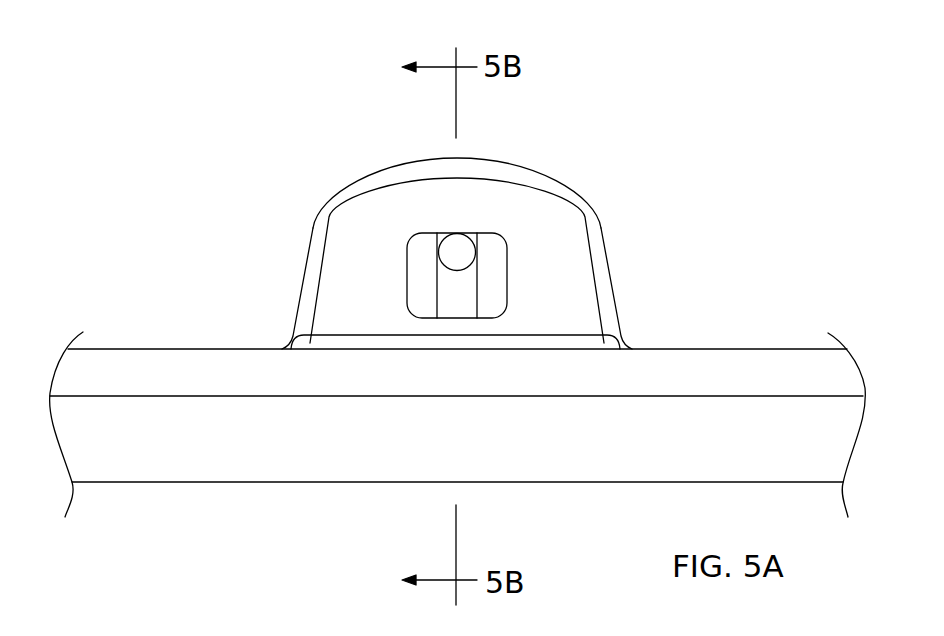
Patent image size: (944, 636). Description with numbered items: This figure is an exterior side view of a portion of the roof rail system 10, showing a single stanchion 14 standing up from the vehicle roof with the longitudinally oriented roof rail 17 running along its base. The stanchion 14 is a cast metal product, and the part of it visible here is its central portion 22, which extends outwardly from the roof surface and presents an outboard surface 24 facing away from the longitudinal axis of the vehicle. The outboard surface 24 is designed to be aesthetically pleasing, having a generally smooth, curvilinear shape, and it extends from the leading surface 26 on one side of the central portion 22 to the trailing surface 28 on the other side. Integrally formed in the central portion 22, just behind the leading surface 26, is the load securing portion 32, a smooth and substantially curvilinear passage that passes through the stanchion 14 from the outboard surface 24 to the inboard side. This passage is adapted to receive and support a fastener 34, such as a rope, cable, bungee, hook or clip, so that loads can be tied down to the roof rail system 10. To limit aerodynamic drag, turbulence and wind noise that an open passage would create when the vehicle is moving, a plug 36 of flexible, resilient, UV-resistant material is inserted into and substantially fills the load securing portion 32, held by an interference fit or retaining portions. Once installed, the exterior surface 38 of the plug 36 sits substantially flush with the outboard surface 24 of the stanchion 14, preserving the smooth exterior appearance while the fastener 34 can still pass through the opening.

The roof rail system 10 is at (733, 192).
The stanchion 14 is at (345, 293).
The roof rail 17 is at (133, 368).
The central portion 22 is at (612, 256).
The outboard surface 24 is at (353, 320).
The leading surface 26 is at (310, 240).
The trailing surface 28 is at (602, 233).
The load securing portion 32 is at (507, 281).
The fastener 34 is at (462, 248).
The plug 36 is at (488, 295).
The exterior surface 38 is at (420, 273).